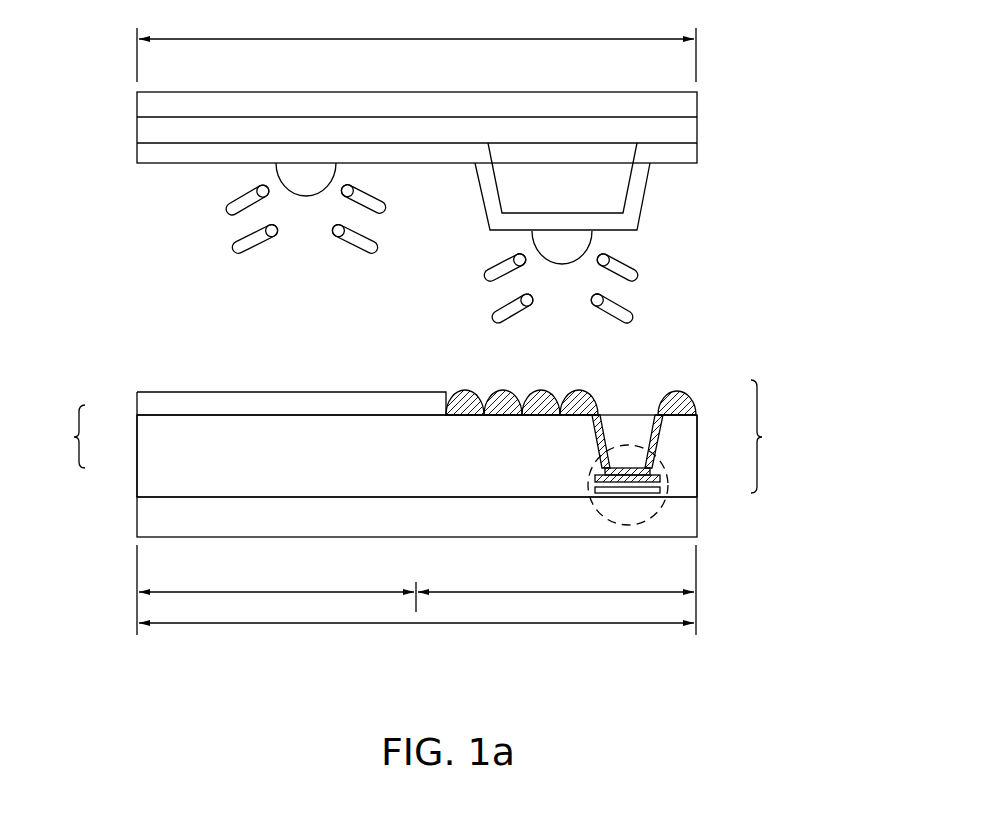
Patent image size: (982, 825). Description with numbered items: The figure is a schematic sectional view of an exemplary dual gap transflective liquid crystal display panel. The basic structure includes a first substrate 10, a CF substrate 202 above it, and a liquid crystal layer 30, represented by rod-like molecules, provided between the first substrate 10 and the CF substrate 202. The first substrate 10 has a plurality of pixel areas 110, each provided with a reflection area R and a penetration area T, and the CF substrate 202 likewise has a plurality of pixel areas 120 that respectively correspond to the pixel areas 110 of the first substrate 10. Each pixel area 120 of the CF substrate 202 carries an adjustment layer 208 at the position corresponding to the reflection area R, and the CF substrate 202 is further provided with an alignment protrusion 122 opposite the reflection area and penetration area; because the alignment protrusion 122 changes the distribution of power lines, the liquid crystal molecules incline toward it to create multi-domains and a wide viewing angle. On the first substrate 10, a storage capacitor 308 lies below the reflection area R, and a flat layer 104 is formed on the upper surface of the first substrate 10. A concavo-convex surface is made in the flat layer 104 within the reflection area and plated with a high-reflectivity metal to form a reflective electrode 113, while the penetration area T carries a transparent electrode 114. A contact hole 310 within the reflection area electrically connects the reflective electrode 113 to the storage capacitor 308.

The pixel area 120 is at (416, 45).
The CF substrate 202 is at (716, 146).
The adjustment layer 208 is at (617, 175).
The alignment protrusion 122 is at (567, 245).
The liquid crystal layer 30 is at (633, 277).
The first substrate 10 is at (418, 438).
The transparent electrode 114 is at (157, 405).
The flat layer 104 is at (157, 460).
The reflective electrode 113 is at (602, 383).
The contact hole 310 is at (642, 425).
The storage capacitor 308 is at (667, 478).
The pixel area 110 is at (417, 578).